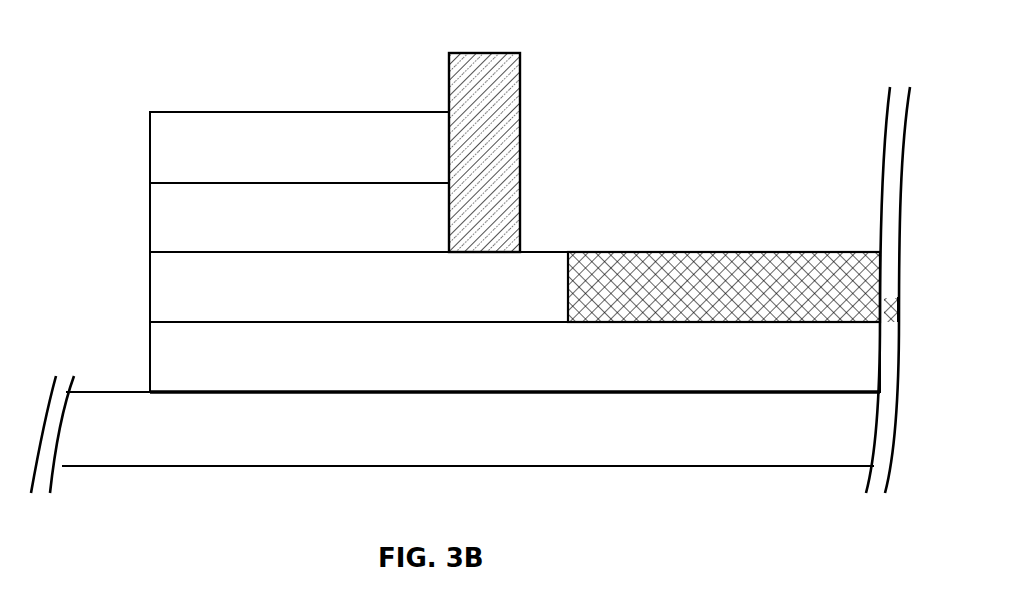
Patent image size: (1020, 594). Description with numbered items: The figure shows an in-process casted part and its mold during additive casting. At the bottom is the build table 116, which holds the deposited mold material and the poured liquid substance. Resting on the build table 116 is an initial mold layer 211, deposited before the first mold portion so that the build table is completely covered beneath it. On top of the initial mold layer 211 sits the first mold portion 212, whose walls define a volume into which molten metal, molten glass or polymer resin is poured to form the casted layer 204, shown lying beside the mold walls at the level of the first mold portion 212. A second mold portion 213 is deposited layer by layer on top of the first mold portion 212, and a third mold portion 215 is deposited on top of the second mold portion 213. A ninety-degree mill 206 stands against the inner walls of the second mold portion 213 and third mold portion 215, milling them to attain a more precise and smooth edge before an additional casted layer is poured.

The build table 116 is at (294, 466).
The initial mold layer 211 is at (150, 356).
The first mold portion 212 is at (150, 290).
The second mold portion 213 is at (150, 218).
The third mold portion 215 is at (150, 147).
The casted layer 204 is at (635, 252).
The 90° mill 206 is at (449, 82).